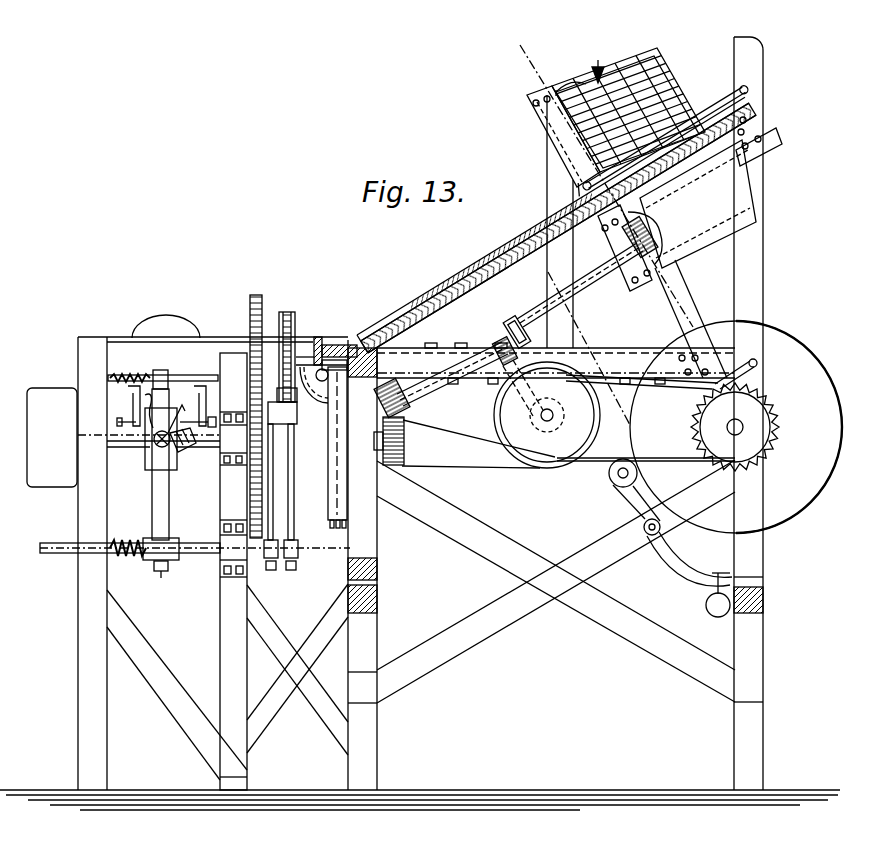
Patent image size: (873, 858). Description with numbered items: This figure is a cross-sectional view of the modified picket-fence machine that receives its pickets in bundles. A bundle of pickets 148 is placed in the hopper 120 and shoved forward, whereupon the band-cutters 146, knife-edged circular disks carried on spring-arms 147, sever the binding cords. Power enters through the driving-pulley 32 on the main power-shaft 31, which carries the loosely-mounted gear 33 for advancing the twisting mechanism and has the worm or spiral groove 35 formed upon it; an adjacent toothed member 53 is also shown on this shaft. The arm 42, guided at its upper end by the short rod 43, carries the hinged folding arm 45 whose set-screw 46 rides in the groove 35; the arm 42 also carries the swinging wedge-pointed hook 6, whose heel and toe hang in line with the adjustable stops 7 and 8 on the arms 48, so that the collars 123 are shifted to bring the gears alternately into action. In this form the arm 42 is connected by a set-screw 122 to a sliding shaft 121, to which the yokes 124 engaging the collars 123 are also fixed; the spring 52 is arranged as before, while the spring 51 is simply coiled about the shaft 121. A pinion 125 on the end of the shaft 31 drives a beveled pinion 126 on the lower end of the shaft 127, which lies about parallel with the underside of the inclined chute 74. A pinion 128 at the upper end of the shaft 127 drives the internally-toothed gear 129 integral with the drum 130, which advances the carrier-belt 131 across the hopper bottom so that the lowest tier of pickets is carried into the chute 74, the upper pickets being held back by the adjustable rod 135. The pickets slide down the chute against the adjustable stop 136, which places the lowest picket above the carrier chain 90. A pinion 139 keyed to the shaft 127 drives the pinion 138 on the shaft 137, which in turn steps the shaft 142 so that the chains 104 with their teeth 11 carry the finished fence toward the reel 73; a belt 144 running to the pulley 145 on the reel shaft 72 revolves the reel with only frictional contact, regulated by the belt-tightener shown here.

The wedge-pointed hook 6 is at (606, 179).
The adjustable stop 7 is at (114, 430).
The adjustable stop 8 is at (213, 417).
The teeth or projections 11 is at (522, 470).
The main power-shaft 31 is at (130, 443).
The driving-pulley 32 is at (52, 437).
The loosely-mounted gear 33 is at (248, 490).
The worm or spiral groove 35 is at (183, 449).
The arm 42 is at (161, 474).
The short rod 43 is at (190, 375).
The folding arm 45 is at (162, 450).
The set-screw 46 is at (178, 408).
The arms 48 is at (131, 408).
The spring 51 is at (126, 545).
The spring 52 is at (128, 374).
The rack gear 53 is at (256, 408).
The reel shaft 72 is at (735, 427).
The reel 73 is at (736, 427).
The inclined chute 74 is at (470, 289).
The carrier belt or chain 90 is at (336, 446).
The chains 104 is at (455, 444).
The hopper 120 is at (563, 136).
The sliding shaft 121 is at (204, 549).
The set-screw 122 is at (162, 572).
The collars 123 is at (284, 395).
The yokes 124 is at (274, 508).
The pinion 125 is at (401, 458).
The beveled pinion 126 is at (398, 391).
The shaft 127 is at (588, 289).
The pinion 128 is at (645, 238).
The internally-toothed gear 129 is at (655, 262).
The drum 130 is at (745, 205).
The carrier-belt 131 is at (698, 204).
The rod 135 is at (721, 112).
The adjustable stop 136 is at (322, 340).
The shaft 137 is at (555, 221).
The pinion 138 is at (497, 343).
The pinion 139 is at (511, 320).
The shaft 142 is at (556, 431).
The belt 144 is at (642, 390).
The pulley 145 is at (735, 427).
The band-cutters 146 is at (608, 63).
The spring-arms 147 is at (568, 78).
The bundle of pickets 148 is at (672, 92).